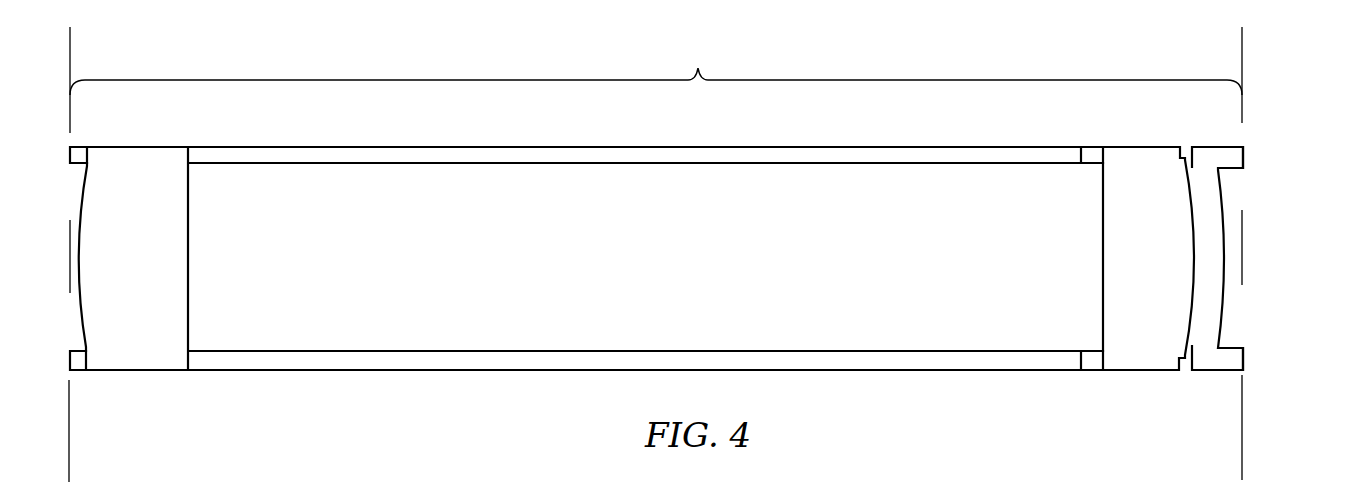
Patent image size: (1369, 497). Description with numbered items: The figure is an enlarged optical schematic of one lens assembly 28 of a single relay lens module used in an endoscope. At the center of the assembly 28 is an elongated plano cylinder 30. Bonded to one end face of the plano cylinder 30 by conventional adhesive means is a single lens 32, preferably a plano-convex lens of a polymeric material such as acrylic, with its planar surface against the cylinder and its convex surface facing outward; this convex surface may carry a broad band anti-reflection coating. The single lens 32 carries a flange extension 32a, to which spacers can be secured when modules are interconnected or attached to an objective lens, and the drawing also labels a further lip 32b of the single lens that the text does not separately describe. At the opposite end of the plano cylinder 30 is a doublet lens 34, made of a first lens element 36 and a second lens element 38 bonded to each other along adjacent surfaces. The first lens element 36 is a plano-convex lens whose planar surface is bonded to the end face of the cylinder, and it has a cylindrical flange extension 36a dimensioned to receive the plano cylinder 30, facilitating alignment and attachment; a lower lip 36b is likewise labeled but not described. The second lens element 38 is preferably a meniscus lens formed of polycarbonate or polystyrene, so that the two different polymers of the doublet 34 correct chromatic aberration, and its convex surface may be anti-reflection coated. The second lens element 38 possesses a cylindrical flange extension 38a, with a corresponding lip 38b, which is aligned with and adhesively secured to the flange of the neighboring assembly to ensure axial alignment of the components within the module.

The lens assembly 28 is at (656, 72).
The plano cylinder 30 is at (705, 266).
The single lens 32 is at (122, 325).
The flange extension 32a is at (70, 152).
The first end flange lower lip 32b is at (68, 362).
The doublet lens 34 is at (1160, 410).
The first lens element 36 is at (1140, 315).
The cylindrical flange extension 36a is at (1090, 155).
The second end flange lower lip 36b is at (1089, 362).
The second lens element 38 is at (1210, 293).
The cylindrical flange extension 38a is at (1233, 158).
The lens lower lip 38b is at (1222, 360).